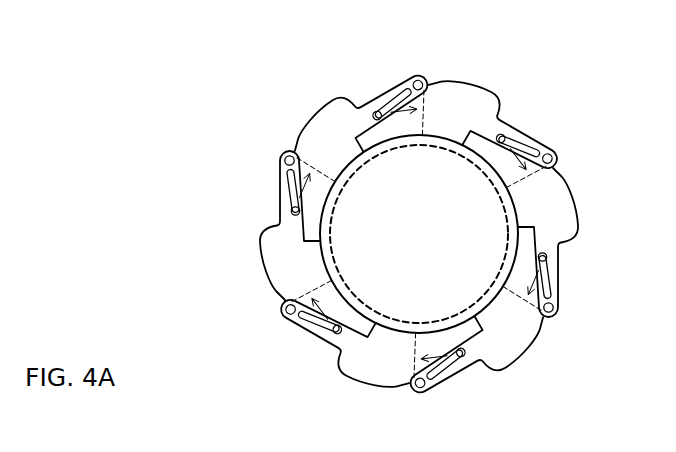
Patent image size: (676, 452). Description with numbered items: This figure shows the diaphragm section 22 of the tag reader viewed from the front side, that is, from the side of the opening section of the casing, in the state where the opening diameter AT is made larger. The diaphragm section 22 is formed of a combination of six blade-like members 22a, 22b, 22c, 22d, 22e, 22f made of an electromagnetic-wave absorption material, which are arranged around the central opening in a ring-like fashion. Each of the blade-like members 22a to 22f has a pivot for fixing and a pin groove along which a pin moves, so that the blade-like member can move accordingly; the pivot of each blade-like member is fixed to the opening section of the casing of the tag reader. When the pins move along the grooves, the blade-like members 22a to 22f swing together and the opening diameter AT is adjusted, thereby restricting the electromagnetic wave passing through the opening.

The diaphragm section 22 is at (242, 31).
The blade-like member 22a is at (322, 128).
The blade-like member 22b is at (468, 102).
The blade-like member 22c is at (552, 200).
The blade-like member 22d is at (507, 341).
The blade-like member 22e is at (365, 357).
The blade-like member 22f is at (290, 264).
The opening diameter AT is at (477, 160).